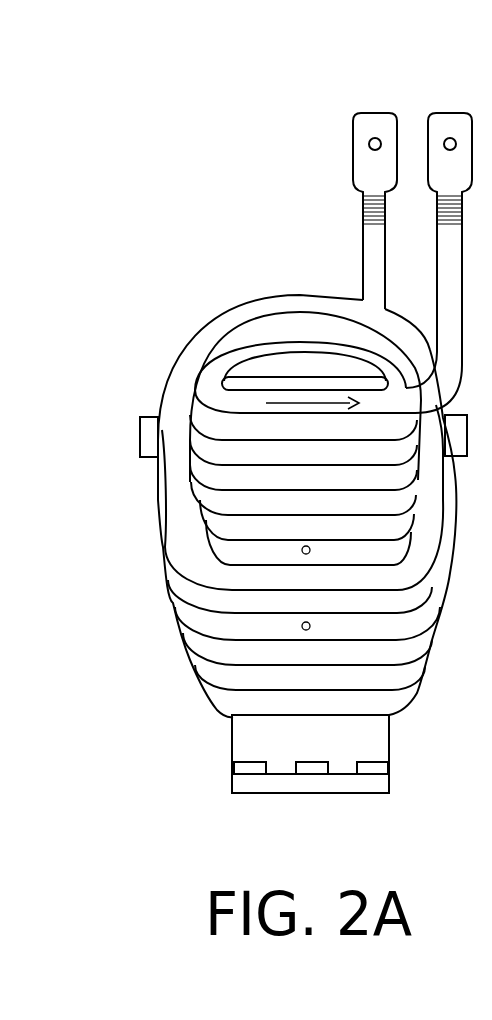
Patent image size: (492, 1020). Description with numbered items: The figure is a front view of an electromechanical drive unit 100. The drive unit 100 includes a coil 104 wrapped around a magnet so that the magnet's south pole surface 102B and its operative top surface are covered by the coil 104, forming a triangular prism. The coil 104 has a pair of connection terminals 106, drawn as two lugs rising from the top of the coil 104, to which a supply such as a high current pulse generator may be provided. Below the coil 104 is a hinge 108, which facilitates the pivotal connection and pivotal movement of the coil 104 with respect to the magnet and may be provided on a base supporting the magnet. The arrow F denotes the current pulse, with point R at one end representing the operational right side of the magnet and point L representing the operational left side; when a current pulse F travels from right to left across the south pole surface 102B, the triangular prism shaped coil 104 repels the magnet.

The drive unit 100 is at (165, 145).
The south pole surface 102B is at (300, 549).
The coil 104 is at (300, 626).
The connection terminals 106 is at (435, 130).
The hinge 108 is at (212, 783).
The arrow F is at (306, 398).